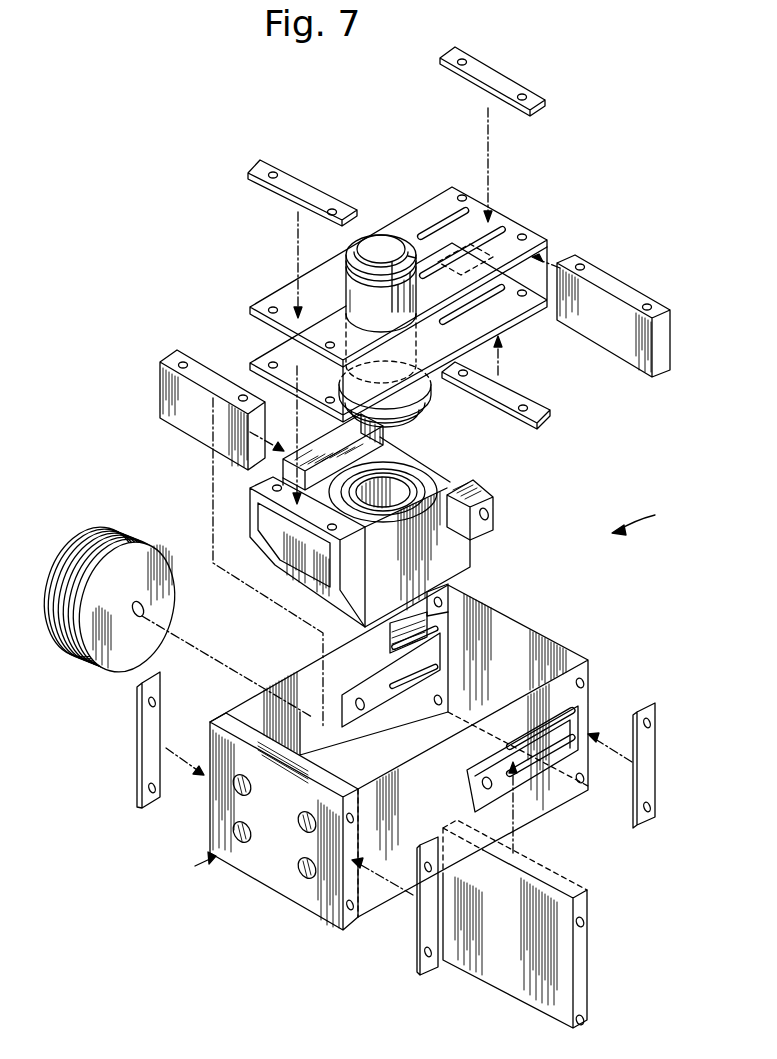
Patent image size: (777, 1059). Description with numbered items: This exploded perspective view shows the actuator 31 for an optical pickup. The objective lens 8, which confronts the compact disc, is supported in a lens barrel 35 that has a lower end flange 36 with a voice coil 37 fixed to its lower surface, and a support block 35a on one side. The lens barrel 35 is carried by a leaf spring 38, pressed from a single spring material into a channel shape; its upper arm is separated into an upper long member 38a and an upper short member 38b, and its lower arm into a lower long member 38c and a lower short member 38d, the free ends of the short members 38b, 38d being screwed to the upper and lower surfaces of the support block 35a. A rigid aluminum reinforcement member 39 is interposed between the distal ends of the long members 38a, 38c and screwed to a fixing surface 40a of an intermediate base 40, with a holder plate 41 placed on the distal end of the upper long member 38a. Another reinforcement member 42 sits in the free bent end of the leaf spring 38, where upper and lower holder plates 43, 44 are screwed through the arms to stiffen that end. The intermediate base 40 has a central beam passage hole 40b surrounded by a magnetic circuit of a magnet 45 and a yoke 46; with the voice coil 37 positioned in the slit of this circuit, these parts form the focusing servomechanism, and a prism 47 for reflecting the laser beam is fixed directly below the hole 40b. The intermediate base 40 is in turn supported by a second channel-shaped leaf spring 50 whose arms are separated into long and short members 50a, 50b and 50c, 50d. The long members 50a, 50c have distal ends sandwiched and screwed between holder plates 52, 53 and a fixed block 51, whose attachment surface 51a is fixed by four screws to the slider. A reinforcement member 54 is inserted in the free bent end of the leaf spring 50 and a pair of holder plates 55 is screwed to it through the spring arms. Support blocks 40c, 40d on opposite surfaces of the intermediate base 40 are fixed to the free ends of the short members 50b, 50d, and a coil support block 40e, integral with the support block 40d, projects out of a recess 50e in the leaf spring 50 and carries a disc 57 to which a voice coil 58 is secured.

The objective lens 8 is at (378, 245).
The actuator 31 is at (649, 517).
The lens barrel 35 is at (368, 277).
The support block 35a is at (430, 252).
The lower end flange 36 is at (428, 386).
The voice coil 37 is at (414, 414).
The leaf spring 38 is at (400, 282).
The upper long member 38a is at (283, 298).
The upper short member 38b is at (460, 235).
The lower long member 38c is at (502, 345).
The lower short member 38d is at (483, 288).
The reinforcement member 39 is at (170, 386).
The intermediate base 40 is at (356, 484).
The fixing surface 40a is at (248, 486).
The beam passage hole 40b is at (440, 470).
The support block 40c is at (489, 513).
The support block 40d is at (330, 428).
The coil support block 40e is at (305, 455).
The holder plate 41 is at (311, 193).
The reinforcement member 42 is at (633, 287).
The upper holder plate 43 is at (537, 403).
The lower holder plate 44 is at (503, 93).
The magnet 45 is at (393, 494).
The yoke 46 is at (487, 507).
The prism 47 is at (442, 621).
The leaf spring 50 is at (418, 740).
The long member 50a is at (528, 812).
The short member 50b is at (553, 735).
The long member 50c is at (313, 672).
The short member 50d is at (347, 717).
The recess 50e is at (300, 727).
The fixed block 51 is at (260, 821).
The attachment surface 51a is at (278, 867).
The holder plate 52 is at (137, 733).
The holder plate 53 is at (417, 920).
The reinforcement member 54 is at (582, 978).
The holder plate 55 is at (650, 777).
The disc 57 is at (122, 653).
The voice coil 58 is at (63, 643).